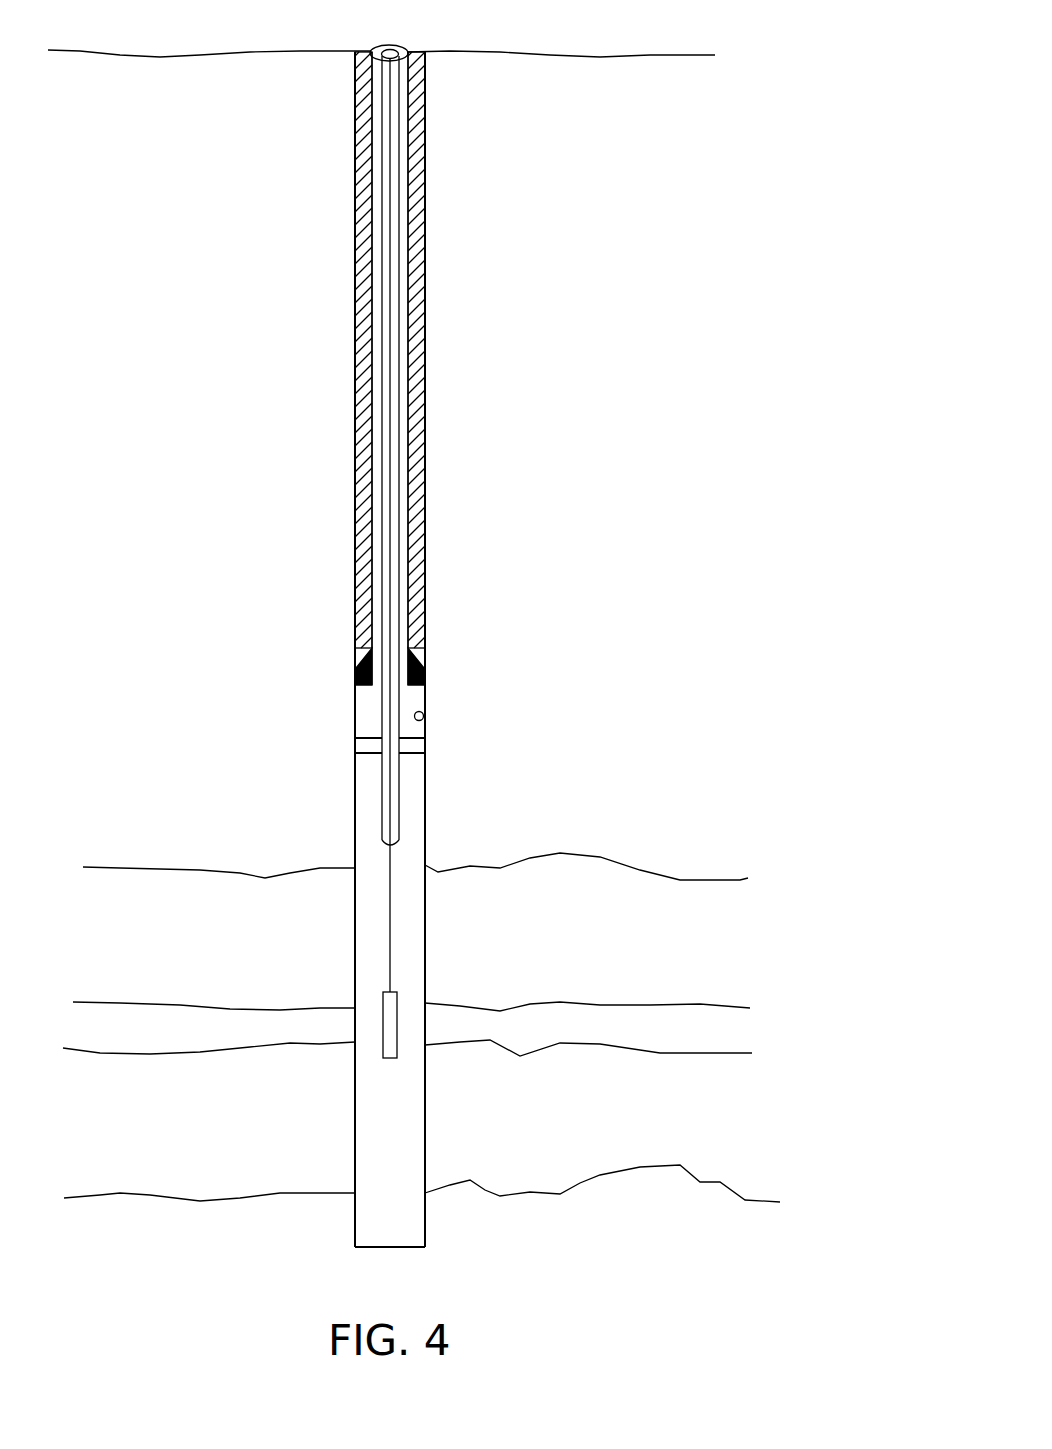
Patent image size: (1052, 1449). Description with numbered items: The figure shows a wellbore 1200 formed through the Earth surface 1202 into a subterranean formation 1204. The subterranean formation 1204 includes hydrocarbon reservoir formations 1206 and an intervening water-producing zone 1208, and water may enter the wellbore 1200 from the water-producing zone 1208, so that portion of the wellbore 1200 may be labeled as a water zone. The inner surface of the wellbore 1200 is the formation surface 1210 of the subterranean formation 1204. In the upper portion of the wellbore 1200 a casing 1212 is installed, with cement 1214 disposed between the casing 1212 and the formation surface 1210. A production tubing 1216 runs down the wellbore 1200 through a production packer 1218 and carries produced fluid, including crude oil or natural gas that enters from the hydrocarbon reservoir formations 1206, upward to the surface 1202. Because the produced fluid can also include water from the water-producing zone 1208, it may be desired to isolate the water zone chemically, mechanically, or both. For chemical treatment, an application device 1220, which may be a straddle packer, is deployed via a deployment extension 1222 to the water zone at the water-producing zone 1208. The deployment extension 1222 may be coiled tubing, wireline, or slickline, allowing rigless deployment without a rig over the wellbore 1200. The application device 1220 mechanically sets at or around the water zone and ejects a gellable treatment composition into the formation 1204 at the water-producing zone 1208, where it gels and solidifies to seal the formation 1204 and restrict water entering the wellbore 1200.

The wellbore 1200 is at (418, 1311).
The Earth surface 1202 is at (300, 52).
The subterranean formation 1204 is at (543, 443).
The hydrocarbon reservoir formations 1206 is at (282, 900).
The water-producing zone 1208 is at (210, 1025).
The formation surface 1210 is at (420, 718).
The casing 1212 is at (366, 94).
The cement 1214 is at (419, 302).
The production tubing 1216 is at (383, 556).
The production packer 1218 is at (366, 748).
The application device 1220 is at (383, 1052).
The deployment extension 1222 is at (393, 190).